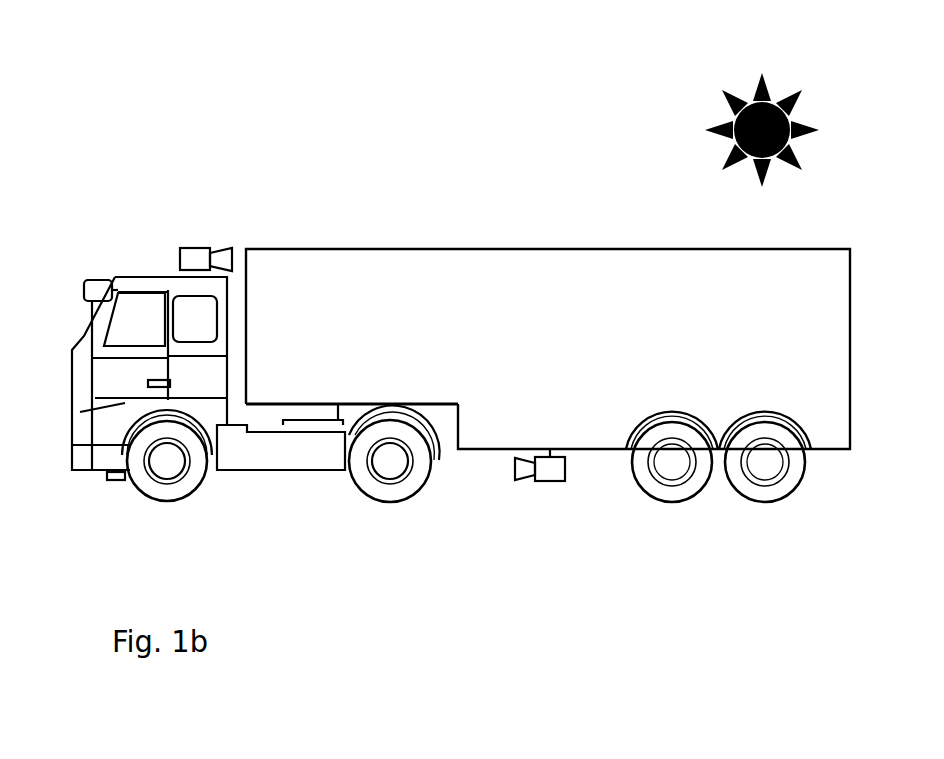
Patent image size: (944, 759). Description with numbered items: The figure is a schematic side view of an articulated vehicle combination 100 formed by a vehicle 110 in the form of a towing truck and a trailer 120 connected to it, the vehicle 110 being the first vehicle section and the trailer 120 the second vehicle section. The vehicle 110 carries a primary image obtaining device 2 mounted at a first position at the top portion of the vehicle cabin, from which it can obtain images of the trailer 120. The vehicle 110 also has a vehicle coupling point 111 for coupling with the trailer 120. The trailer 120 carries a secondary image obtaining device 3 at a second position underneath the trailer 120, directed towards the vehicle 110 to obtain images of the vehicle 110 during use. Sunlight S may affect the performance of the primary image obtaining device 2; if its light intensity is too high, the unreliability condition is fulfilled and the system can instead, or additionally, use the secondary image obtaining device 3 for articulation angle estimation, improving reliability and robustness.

The articulated vehicle combination 100 is at (347, 168).
The vehicle 110 is at (150, 245).
The trailer 120 is at (595, 233).
The vehicle coupling point 111 is at (408, 387).
The primary image obtaining device 2 is at (200, 248).
The secondary image obtaining device 3 is at (552, 481).
The sunlight S is at (690, 130).